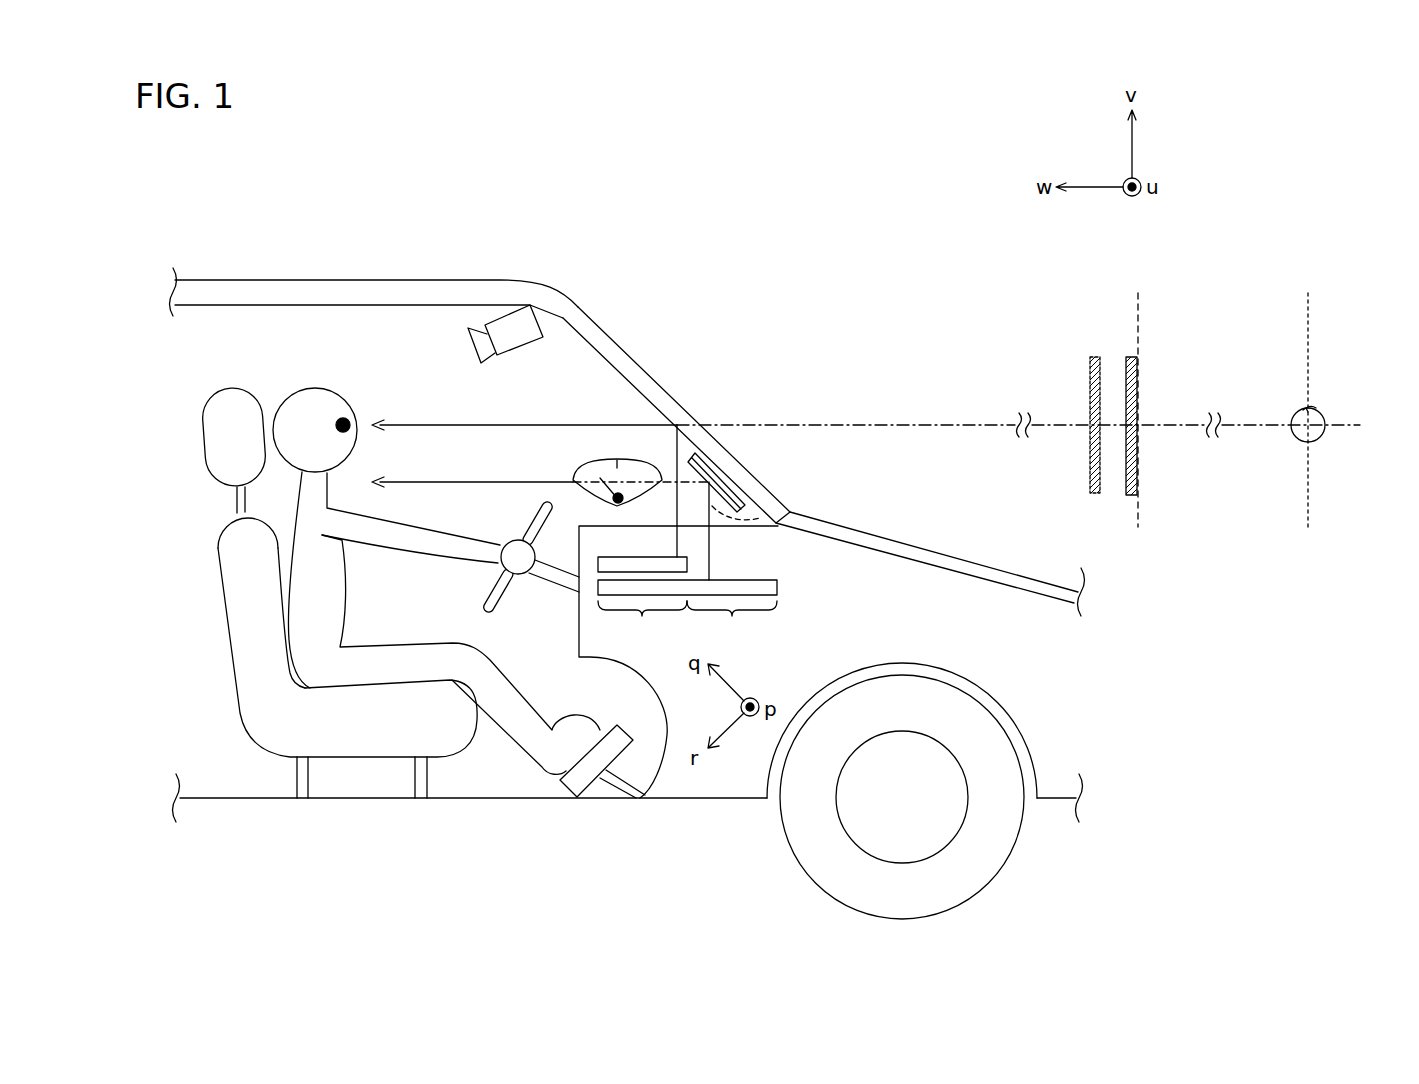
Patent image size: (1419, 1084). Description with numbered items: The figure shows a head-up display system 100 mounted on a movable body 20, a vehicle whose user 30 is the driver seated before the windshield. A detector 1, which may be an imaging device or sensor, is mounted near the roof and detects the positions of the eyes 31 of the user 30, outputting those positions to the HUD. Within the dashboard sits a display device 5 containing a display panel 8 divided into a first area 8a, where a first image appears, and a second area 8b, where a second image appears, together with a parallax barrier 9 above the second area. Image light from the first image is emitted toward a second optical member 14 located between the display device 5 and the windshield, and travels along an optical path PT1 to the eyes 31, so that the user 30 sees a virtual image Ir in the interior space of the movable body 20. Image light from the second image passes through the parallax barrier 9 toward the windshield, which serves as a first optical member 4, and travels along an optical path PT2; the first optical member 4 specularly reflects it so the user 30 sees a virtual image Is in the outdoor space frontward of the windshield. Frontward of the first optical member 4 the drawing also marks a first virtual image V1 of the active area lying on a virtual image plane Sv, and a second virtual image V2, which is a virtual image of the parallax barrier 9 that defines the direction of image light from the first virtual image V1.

The HUD system 100 is at (746, 334).
The movable body 20 is at (295, 280).
The first optical member 4 is at (594, 322).
The detector 1 is at (518, 338).
The user 30 is at (285, 393).
The eyes 31 is at (346, 420).
The second optical member 14 is at (727, 466).
The display device 5 is at (758, 598).
The parallax barrier 9 is at (690, 558).
The display panel 8 is at (717, 614).
The first area 8a is at (732, 624).
The second area 8b is at (642, 624).
The optical path PT1 is at (490, 482).
The optical path PT2 is at (490, 425).
The virtual image Ir is at (575, 478).
The first virtual image V1 is at (1130, 357).
The second virtual image V2 is at (1092, 357).
The virtual image plane Sv is at (1139, 397).
The virtual image Is is at (1323, 433).